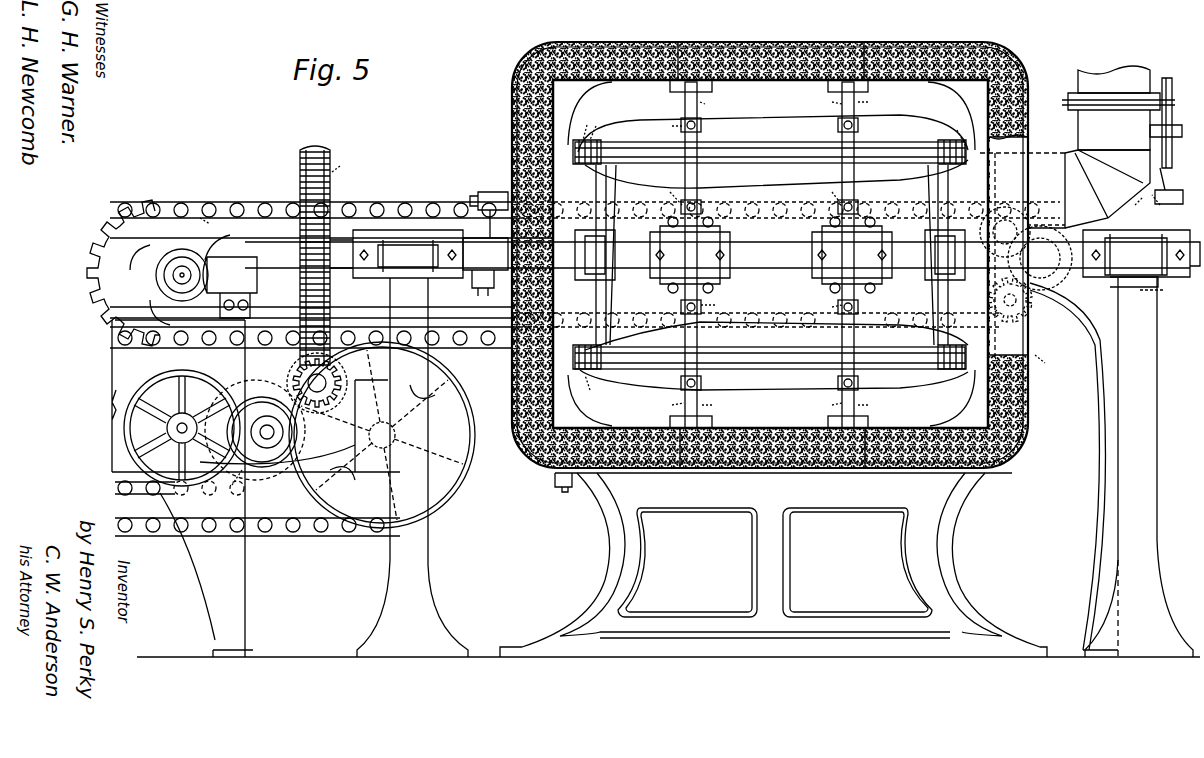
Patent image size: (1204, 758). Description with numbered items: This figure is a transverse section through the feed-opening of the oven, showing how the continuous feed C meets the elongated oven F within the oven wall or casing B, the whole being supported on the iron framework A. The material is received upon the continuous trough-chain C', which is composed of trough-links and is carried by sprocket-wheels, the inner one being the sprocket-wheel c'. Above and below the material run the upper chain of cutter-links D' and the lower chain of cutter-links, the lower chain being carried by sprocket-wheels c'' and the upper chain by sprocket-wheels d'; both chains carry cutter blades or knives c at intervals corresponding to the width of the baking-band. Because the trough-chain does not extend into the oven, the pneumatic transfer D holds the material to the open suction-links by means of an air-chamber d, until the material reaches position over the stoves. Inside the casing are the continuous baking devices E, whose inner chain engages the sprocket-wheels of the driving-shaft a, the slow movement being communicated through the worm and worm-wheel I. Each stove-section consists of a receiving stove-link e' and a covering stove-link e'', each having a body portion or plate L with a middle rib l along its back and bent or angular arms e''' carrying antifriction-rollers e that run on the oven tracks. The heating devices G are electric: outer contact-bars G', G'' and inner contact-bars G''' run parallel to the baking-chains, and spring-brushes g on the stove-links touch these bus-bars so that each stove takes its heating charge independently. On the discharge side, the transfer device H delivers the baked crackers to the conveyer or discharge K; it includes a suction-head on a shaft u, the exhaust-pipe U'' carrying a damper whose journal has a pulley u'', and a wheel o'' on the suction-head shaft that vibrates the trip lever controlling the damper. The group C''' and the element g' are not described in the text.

The framework A is at (775, 467).
The oven wall or casing B is at (788, 245).
The continuous feed C is at (167, 273).
The continuous trough-chain C' is at (337, 435).
The spoked wheel C''' is at (244, 488).
The pneumatic transfer for the feed D is at (659, 260).
The upper chain of cutter-links D' is at (331, 248).
The continuous baking devices E is at (773, 122).
The oven F is at (774, 392).
The heating devices G is at (769, 230).
The outer contact-bar G' is at (856, 254).
The outer contact-bar G'' is at (699, 254).
The inner contact-bars G''' is at (776, 244).
The transfer device for the discharge H is at (1046, 190).
The worm and worm-wheel I is at (323, 255).
The conveyer or discharge K is at (1141, 267).
The body portion or plate L is at (770, 254).
The exhaust-pipe U'' is at (1118, 147).
The driving-shaft a is at (717, 255).
The cutter blades or knives c is at (585, 359).
The sprocket-wheel c' is at (318, 422).
The sprocket-wheels c'' is at (255, 440).
The air-chamber d is at (350, 271).
The sprocket-wheels d' is at (635, 275).
The antifriction-rollers e is at (771, 254).
The receiving stove-link e' is at (786, 253).
The covering stove-link e'' is at (776, 255).
The bent or angular arms e''' is at (766, 148).
The spring-brushes g is at (750, 253).
The upper nut g' is at (671, 125).
The middle projection or rib l is at (811, 253).
The wheel o'' is at (1156, 208).
The shaft u is at (1139, 207).
The pulley u'' is at (1166, 135).